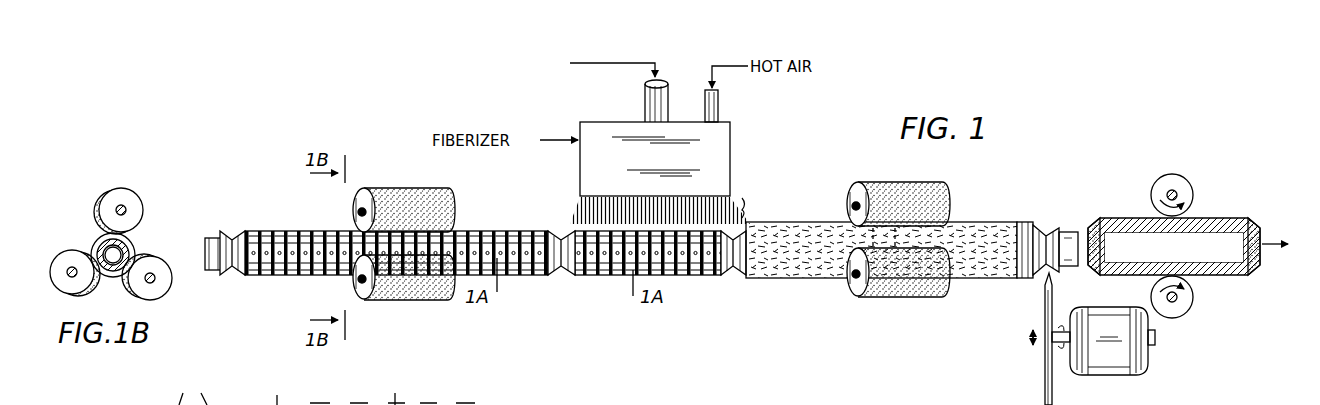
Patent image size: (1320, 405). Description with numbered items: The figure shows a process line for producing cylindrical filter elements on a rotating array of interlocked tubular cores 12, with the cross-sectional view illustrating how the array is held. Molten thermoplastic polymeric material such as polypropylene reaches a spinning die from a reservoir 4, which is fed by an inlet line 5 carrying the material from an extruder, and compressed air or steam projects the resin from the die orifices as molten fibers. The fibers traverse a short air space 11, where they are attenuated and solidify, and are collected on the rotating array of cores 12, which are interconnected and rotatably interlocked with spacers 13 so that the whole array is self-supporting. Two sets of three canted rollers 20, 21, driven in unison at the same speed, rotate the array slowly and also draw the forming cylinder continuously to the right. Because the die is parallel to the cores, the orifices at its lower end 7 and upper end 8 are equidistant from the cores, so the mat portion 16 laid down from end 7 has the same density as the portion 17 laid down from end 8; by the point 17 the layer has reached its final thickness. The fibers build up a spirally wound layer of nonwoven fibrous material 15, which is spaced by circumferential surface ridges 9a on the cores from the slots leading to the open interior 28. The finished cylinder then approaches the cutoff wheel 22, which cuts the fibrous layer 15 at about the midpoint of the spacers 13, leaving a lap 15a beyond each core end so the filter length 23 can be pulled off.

In FIG. 1, the reservoir 4 is at (564, 76).
In FIG. 1, the inlet line 5 is at (645, 102).
In FIG. 1, the lower end 7 is at (578, 198).
In FIG. 1, the upper end 8 is at (735, 197).
In FIG. 1A, the circumferential surface ridges 9a is at (293, 389).
In FIG. 1, the air space 11 is at (758, 207).
In FIG. 1B, the tubular cores 12 is at (94, 240).
In FIG. 1, the tubular cores 12 is at (532, 231).
In FIG. 1A, the tubular cores 12 is at (430, 404).
In FIG. 1, the spacers 13 is at (229, 276).
In FIG. 1A, the spacers 13 is at (336, 390).
In FIG. 1, the nonwoven fibrous material 15 is at (968, 222).
In FIG. 1, the lap 15a is at (1040, 227).
In FIG. 1, the mat portion 16 is at (588, 196).
In FIG. 1, the mat portion 17 is at (724, 196).
In FIG. 1B, the canted rollers 20 is at (136, 192).
In FIG. 1, the canted rollers 20 is at (404, 244).
In FIG. 1, the canted rollers 21 is at (895, 183).
In FIG. 1, the cutoff wheel 22 is at (1045, 381).
In FIG. 1, the filter length 23 is at (1223, 214).
In FIG. 1, the open interior 28 is at (1135, 232).